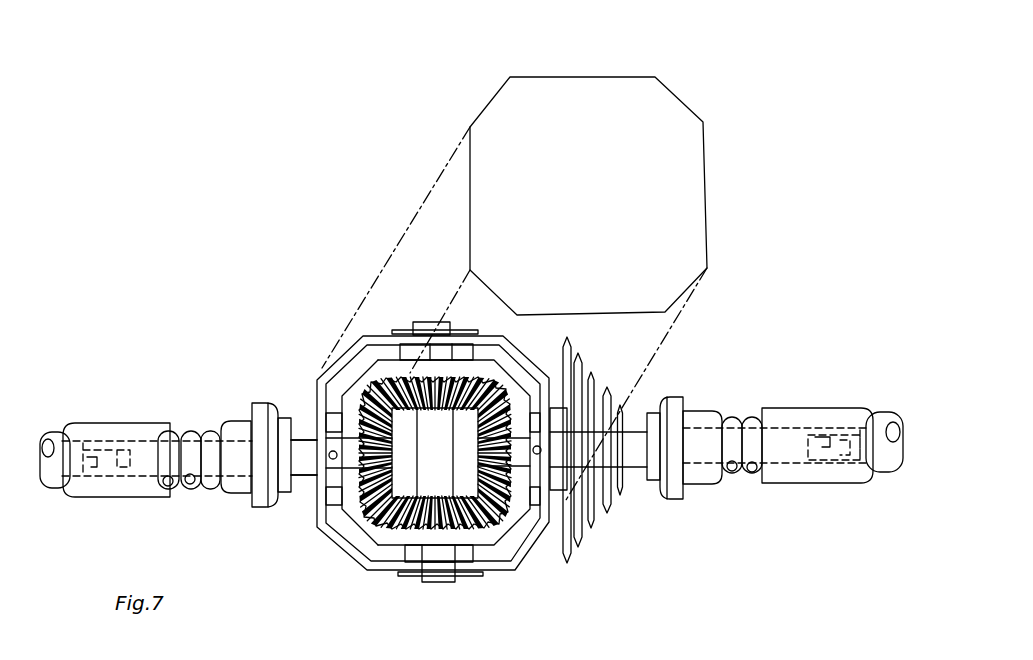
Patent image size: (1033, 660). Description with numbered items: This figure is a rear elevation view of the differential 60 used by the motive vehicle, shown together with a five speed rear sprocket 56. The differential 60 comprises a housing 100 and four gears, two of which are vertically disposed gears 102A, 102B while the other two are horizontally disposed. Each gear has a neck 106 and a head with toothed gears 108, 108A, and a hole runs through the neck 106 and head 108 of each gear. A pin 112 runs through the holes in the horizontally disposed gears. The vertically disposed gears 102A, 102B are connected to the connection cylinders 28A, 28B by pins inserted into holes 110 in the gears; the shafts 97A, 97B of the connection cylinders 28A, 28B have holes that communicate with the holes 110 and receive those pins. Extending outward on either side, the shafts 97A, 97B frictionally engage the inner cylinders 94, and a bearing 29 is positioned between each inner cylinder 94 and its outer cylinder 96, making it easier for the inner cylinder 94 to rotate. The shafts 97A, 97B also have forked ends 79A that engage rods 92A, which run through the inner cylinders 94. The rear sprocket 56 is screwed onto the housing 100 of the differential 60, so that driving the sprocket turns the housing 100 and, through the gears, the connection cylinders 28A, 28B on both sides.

The differential 60 is at (338, 356).
The housing 100 is at (342, 548).
The vertically disposed gear 102A is at (343, 396).
The vertically disposed gear 102B is at (518, 546).
The pin 112 is at (431, 322).
The head with toothed gears 108A is at (481, 366).
The head with toothed gears 108 is at (485, 540).
The neck 106 is at (393, 413).
The connection cylinder 28A is at (120, 498).
The connection cylinder 28B is at (790, 483).
The forked end 79A is at (96, 486).
The rod 92A is at (125, 443).
The outer cylinder 96 is at (83, 422).
The inner cylinder 94 is at (177, 428).
The bearing 29 is at (260, 502).
The hole 110 is at (279, 440).
The shaft 97A is at (305, 475).
The shaft 97B is at (637, 460).
The rear sprocket 56 is at (594, 372).